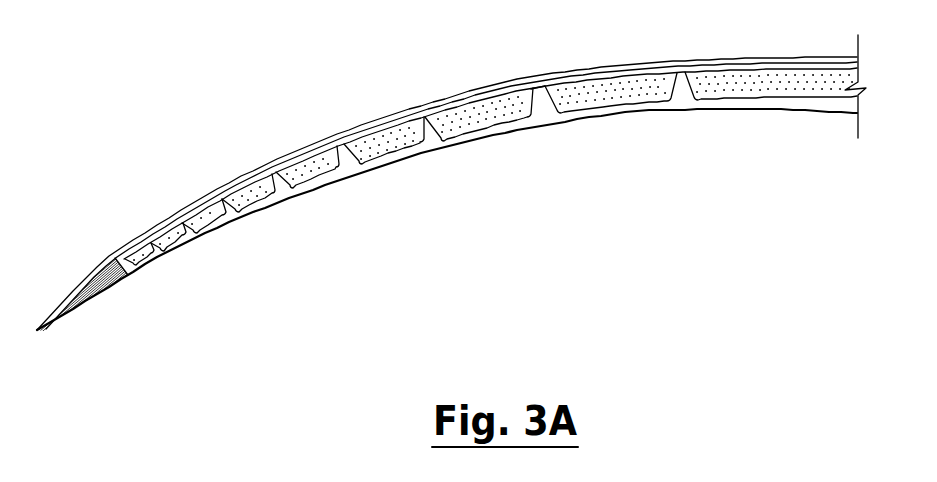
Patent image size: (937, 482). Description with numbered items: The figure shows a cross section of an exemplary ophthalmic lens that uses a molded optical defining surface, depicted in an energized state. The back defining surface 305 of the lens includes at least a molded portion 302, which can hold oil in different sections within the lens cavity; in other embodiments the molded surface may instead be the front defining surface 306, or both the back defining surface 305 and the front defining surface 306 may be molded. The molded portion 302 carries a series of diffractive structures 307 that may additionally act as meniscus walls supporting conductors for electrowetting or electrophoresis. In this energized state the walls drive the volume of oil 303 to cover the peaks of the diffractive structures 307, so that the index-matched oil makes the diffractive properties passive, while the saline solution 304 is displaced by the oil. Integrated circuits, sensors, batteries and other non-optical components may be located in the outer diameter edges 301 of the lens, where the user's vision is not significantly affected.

The outer diameter edges of the lens 301 is at (92, 287).
The molded portion 302 is at (182, 237).
The volume of oil 303 is at (247, 197).
The saline solution 304 is at (280, 160).
The back defining surface 305 is at (352, 176).
The front defining surface 306 is at (348, 129).
The diffractive structures 307 is at (536, 88).